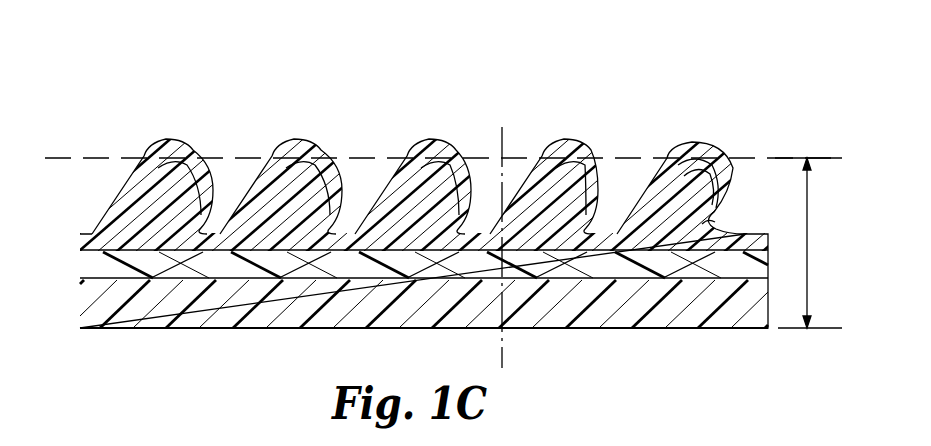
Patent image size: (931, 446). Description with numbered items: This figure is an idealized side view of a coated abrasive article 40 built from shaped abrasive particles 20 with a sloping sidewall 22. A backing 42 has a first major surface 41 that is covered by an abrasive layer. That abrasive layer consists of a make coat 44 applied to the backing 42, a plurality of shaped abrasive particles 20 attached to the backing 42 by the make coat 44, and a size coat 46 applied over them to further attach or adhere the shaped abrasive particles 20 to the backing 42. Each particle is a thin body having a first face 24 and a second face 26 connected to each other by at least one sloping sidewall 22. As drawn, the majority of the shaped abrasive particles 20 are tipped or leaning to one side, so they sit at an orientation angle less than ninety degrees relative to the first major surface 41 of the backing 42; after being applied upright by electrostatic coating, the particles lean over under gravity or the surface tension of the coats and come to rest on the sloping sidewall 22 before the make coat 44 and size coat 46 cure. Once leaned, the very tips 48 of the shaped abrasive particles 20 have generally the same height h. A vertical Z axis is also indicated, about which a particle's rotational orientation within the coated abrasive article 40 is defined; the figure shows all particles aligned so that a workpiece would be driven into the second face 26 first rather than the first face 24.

The coated abrasive article 40 is at (130, 114).
The tips 48 is at (281, 144).
The shaped abrasive particles 20 is at (430, 187).
The size coat 46 is at (573, 151).
The first face 24 is at (673, 162).
The sloping sidewall 22 is at (682, 182).
The second face 26 is at (693, 213).
The make coat 44 is at (92, 271).
The backing 42 is at (107, 307).
The first major surface 41 is at (173, 282).
The Z axis Z is at (500, 138).
The height h is at (808, 238).